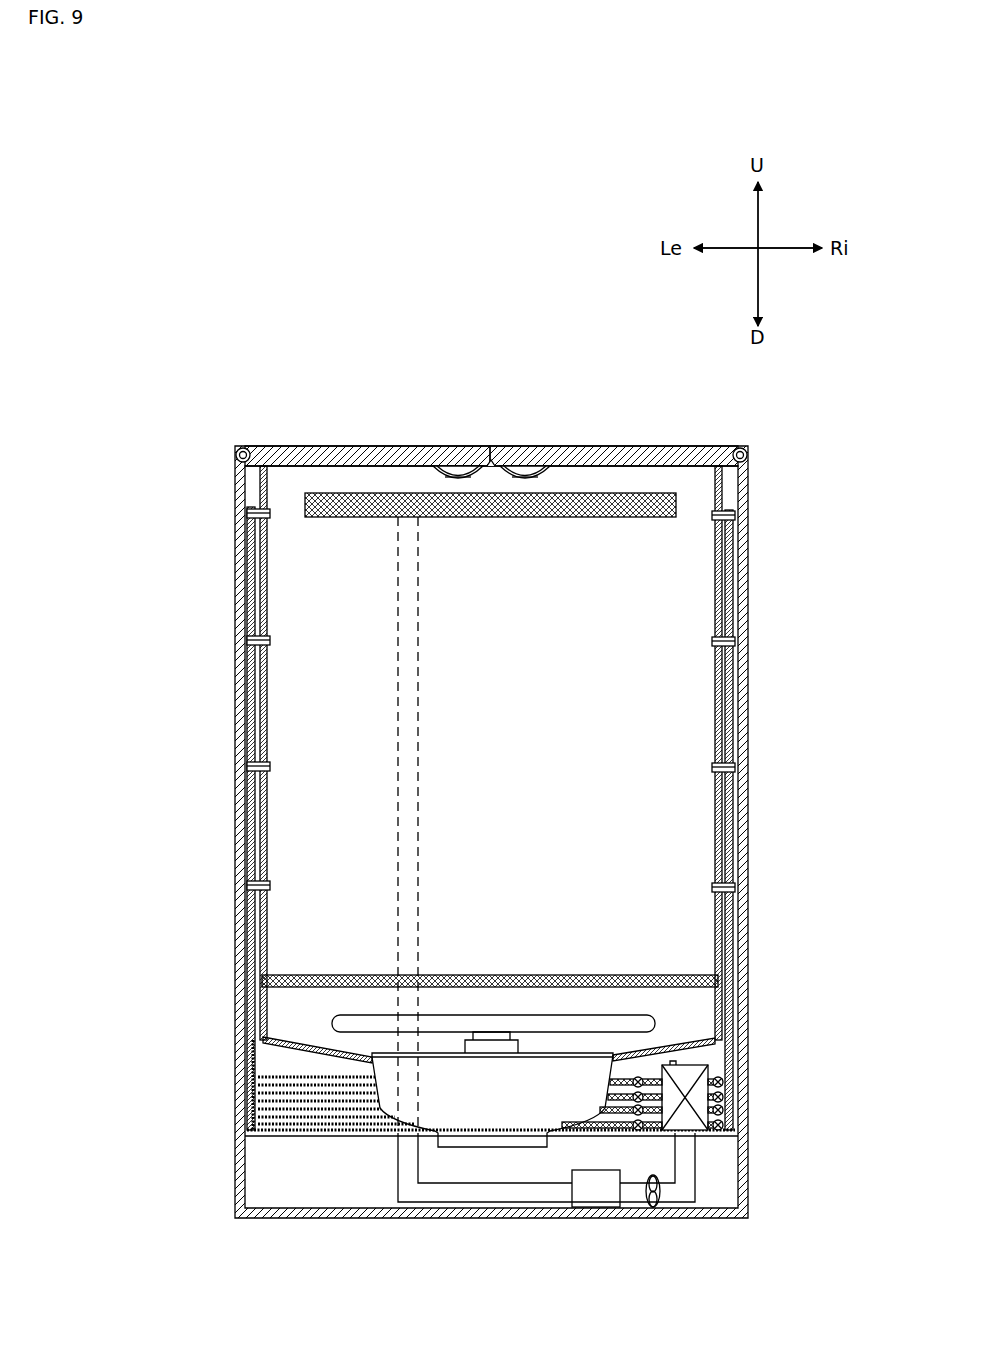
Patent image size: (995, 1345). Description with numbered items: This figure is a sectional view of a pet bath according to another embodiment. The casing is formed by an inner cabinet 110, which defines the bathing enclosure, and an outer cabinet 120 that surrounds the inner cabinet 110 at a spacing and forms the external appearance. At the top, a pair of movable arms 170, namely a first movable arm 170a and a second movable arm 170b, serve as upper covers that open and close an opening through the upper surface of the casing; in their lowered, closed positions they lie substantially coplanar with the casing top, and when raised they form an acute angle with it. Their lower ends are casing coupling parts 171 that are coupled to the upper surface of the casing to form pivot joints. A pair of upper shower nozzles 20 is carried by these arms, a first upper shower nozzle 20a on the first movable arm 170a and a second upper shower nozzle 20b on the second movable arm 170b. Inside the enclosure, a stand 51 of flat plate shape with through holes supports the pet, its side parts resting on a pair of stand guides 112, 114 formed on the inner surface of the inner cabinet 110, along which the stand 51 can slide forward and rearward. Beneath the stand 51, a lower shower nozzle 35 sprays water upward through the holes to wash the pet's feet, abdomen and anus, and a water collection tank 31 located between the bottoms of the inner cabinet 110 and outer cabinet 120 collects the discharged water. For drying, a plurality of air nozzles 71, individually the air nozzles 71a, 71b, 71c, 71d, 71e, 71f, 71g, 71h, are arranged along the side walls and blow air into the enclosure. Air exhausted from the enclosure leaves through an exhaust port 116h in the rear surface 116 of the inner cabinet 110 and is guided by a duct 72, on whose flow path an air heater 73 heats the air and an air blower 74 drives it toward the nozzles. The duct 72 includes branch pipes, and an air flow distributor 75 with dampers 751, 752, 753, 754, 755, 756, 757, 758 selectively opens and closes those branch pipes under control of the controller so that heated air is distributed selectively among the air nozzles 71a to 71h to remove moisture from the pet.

The upper shower nozzles 20 is at (491, 350).
The first upper shower nozzle 20a is at (457, 447).
The second upper shower nozzle 20b is at (577, 447).
The movable arms 170 is at (473, 421).
The first movable arm 170a is at (400, 447).
The second movable arm 170b is at (535, 447).
The casing coupling parts 171 is at (237, 447).
The rear surface of the inner cabinet 116 is at (655, 447).
The exhaust port 116h is at (676, 497).
The inner cabinet 110 is at (480, 716).
The stand guide 112 is at (262, 975).
The stand guide 114 is at (723, 983).
The outer cabinet 120 is at (748, 578).
The air nozzles 71 is at (470, 922).
The air nozzle 71a is at (260, 517).
The air nozzle 71b is at (262, 645).
The air nozzle 71c is at (262, 770).
The air nozzle 71d is at (262, 888).
The air nozzle 71e is at (725, 517).
The air nozzle 71f is at (725, 645).
The air nozzle 71g is at (725, 770).
The air nozzle 71h is at (725, 885).
The air heater 73 is at (408, 680).
The stand 51 is at (262, 985).
The lower shower nozzle 35 is at (332, 1022).
The water collection tank 31 is at (457, 1105).
The duct 72 is at (410, 1188).
The air blower 74 is at (658, 1192).
The air flow distributor 75 is at (698, 1060).
The damper 751 is at (608, 1082).
The damper 752 is at (606, 1097).
The damper 753 is at (598, 1110).
The damper 754 is at (580, 1124).
The damper 755 is at (724, 1082).
The damper 756 is at (724, 1097).
The damper 757 is at (724, 1110).
The damper 758 is at (724, 1125).